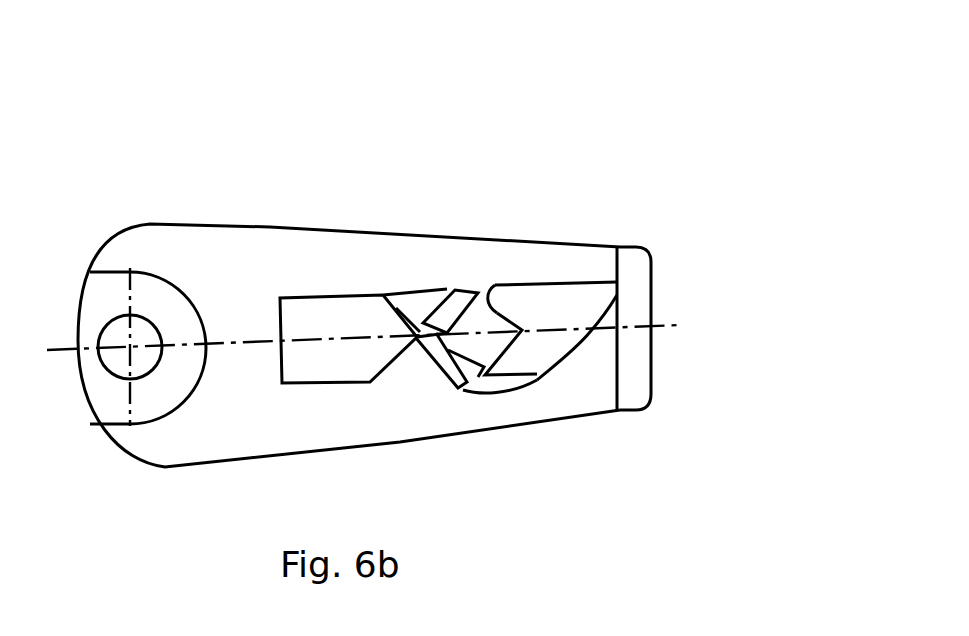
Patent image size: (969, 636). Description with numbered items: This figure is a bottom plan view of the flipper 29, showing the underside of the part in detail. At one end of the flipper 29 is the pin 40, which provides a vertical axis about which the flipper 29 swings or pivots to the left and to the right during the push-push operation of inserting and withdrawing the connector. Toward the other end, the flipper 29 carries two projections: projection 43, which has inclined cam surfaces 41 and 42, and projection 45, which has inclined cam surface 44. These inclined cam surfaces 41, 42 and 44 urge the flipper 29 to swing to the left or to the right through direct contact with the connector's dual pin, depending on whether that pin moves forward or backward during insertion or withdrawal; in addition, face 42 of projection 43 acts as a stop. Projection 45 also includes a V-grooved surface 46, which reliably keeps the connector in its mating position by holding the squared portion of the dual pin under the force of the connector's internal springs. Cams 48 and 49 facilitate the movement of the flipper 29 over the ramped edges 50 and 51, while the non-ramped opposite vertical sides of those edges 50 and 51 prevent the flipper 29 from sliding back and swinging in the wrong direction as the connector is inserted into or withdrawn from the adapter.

The flipper 29 is at (363, 345).
The pin 40 is at (120, 353).
The inclined cam surface 41 is at (403, 307).
The inclined cam surface 42 is at (395, 370).
The projection 43 is at (418, 337).
The inclined cam surface 44 is at (583, 340).
The projection 45 is at (551, 328).
The V-grooved surface 46 is at (507, 312).
The cam 48 is at (455, 367).
The cam 49 is at (470, 305).
The ramped edge 50 is at (530, 380).
The ramped edge 51 is at (431, 310).